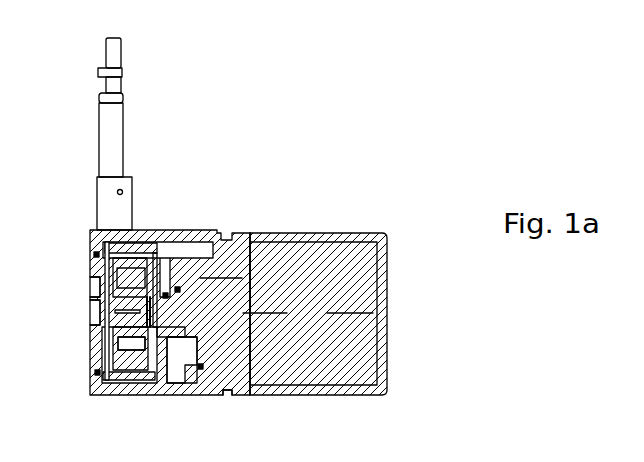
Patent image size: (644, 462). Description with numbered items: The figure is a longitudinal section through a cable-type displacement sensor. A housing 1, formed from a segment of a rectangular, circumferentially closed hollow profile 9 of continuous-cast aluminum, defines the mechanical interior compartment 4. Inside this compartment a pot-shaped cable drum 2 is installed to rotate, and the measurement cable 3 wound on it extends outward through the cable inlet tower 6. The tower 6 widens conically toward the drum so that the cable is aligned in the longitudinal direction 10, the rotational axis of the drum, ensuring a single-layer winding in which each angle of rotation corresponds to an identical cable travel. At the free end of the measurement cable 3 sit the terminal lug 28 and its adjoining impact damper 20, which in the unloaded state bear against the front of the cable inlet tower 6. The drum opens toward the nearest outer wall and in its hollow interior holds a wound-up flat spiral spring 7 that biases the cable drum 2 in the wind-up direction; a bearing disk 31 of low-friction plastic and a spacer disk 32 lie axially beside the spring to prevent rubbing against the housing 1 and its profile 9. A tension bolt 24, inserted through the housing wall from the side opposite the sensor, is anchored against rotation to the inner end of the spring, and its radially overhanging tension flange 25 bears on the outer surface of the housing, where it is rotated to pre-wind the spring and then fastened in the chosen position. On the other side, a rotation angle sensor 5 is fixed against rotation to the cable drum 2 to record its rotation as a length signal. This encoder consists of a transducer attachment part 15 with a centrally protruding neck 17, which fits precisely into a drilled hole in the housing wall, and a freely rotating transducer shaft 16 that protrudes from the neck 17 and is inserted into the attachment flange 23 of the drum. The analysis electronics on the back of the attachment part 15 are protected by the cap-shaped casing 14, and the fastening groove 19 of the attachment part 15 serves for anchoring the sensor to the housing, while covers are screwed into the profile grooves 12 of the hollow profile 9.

The housing 1 is at (156, 338).
The cap-shaped casing 14 is at (320, 232).
The neck 17 is at (313, 313).
The rotation angle sensor 5 is at (298, 205).
The fastening groove 19 is at (228, 392).
The transducer attachment part 15 is at (223, 291).
The transducer shaft 16 is at (296, 330).
The attachment flange 23 is at (180, 334).
The cable drum 2 is at (128, 243).
The spacer disk 32 is at (138, 378).
The flat spiral spring 7 is at (127, 355).
The bearing disk 31 is at (114, 340).
The measurement cable 3 is at (108, 243).
The longitudinal direction 10 is at (167, 292).
The hollow profile 9 is at (178, 288).
The profile groove 12 is at (94, 255).
The tension bolt 24 is at (97, 306).
The tension flange 25 is at (92, 330).
The mechanical interior compartment 4 is at (88, 343).
The cable inlet tower 6 is at (117, 191).
The impact damper 20 is at (112, 121).
The terminal lug 28 is at (112, 44).